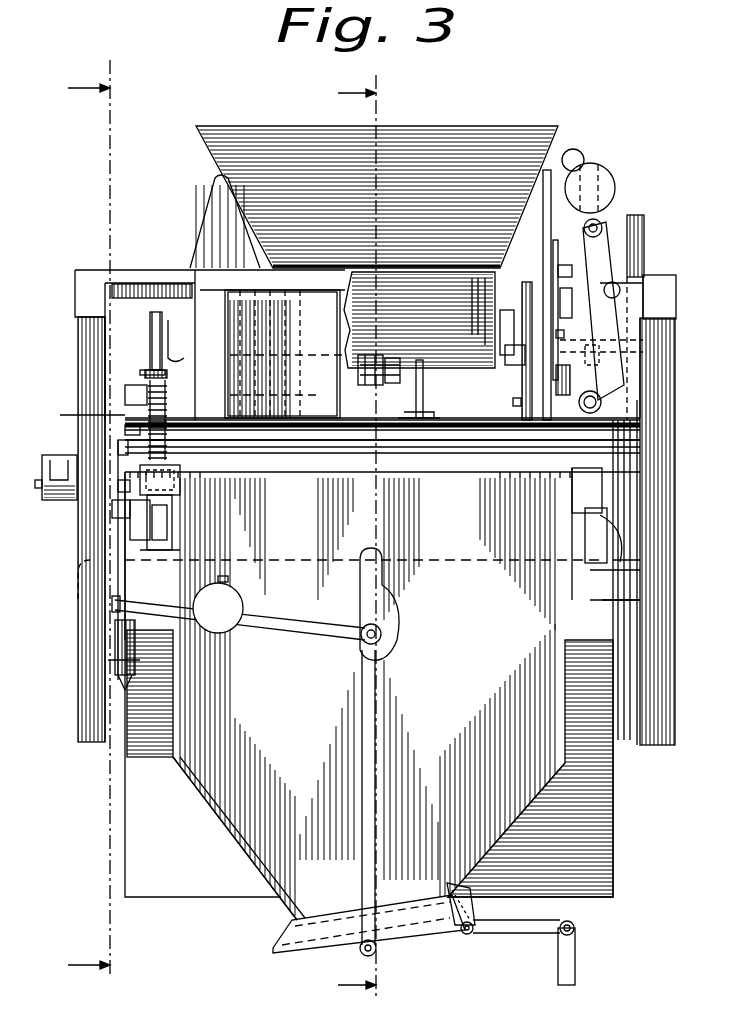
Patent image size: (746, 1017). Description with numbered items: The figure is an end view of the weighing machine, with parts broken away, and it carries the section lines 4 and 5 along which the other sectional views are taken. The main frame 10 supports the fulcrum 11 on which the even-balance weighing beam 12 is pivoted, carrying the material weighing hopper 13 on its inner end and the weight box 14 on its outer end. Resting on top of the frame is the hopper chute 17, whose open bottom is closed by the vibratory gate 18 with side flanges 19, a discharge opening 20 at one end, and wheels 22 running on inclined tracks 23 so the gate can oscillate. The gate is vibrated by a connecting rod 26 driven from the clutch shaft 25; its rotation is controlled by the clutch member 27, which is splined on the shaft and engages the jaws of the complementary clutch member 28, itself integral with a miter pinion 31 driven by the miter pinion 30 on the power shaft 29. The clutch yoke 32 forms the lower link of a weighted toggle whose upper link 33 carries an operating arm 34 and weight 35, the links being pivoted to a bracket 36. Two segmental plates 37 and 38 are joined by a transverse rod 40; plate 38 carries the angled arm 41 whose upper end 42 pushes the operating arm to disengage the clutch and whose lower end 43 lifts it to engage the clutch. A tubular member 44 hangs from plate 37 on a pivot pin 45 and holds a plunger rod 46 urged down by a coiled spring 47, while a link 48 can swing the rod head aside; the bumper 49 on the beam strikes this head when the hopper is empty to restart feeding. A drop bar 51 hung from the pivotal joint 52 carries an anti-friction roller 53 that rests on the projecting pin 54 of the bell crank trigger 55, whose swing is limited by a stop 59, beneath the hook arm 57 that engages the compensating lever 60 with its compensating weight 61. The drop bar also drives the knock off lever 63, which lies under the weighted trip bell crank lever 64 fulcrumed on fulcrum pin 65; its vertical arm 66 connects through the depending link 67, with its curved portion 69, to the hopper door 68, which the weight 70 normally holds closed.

The section line 4- 4 is at (90, 517).
The section line 5- 5 is at (359, 540).
The main frame 10 is at (78, 680).
The fulcrum 11 is at (628, 520).
The weighing beam 12 is at (575, 470).
The material weighing hopper 13 is at (215, 800).
The weight box 14 is at (600, 847).
The hopper chute 17 is at (258, 138).
The vibratory gate 18 is at (462, 372).
The side flanges 19 is at (480, 282).
The discharge opening 20 is at (352, 300).
The wheels 22 is at (225, 330).
The inclined tracks 23 is at (280, 378).
The clutch shaft 25 is at (522, 380).
The connecting rod 26 is at (368, 388).
The clutch member 27 is at (602, 400).
The complementary clutch member 28 is at (560, 382).
The power shaft 29 is at (560, 322).
The miter pinion 30 is at (560, 350).
The miter pinion 31 is at (562, 335).
The clutch yoke 32 is at (612, 338).
The upper toggle link 33 is at (615, 280).
The operating arm 34 is at (566, 266).
The weight 35 is at (600, 183).
The bracket 36 is at (643, 220).
The segmental plate 37 is at (178, 341).
The segmental plate 38 is at (528, 440).
The transverse rod 40 is at (445, 437).
The angled arm 41 is at (546, 288).
The upper end of angled arm 42 is at (545, 242).
The lower end of angled arm 43 is at (498, 437).
The tubular member 44 is at (150, 346).
The pivot pin 45 is at (151, 309).
The plunger rod 46 is at (163, 420).
The coiled spring 47 is at (132, 398).
The link 48 is at (160, 378).
The bumper 49 is at (170, 480).
The drop bar 51 is at (87, 416).
The pivotal joint 52 is at (137, 374).
The anti-friction roller 53 is at (120, 442).
The projecting pin 54 is at (125, 430).
The bell crank trigger 55 is at (112, 505).
The compensating-lever hook arm 57 is at (118, 490).
The stop 59 is at (150, 510).
The compensating lever 60 is at (42, 460).
The compensating weight 61 is at (35, 484).
The knock off lever 63 is at (115, 640).
The weighted trip bell crank lever 64 is at (160, 610).
The fulcrum pin 65 is at (365, 642).
The vertical arm 66 is at (362, 575).
The depending link 67 is at (362, 775).
The hopper door 68 is at (330, 945).
The curved portion 69 is at (395, 632).
The weight 70 is at (576, 958).